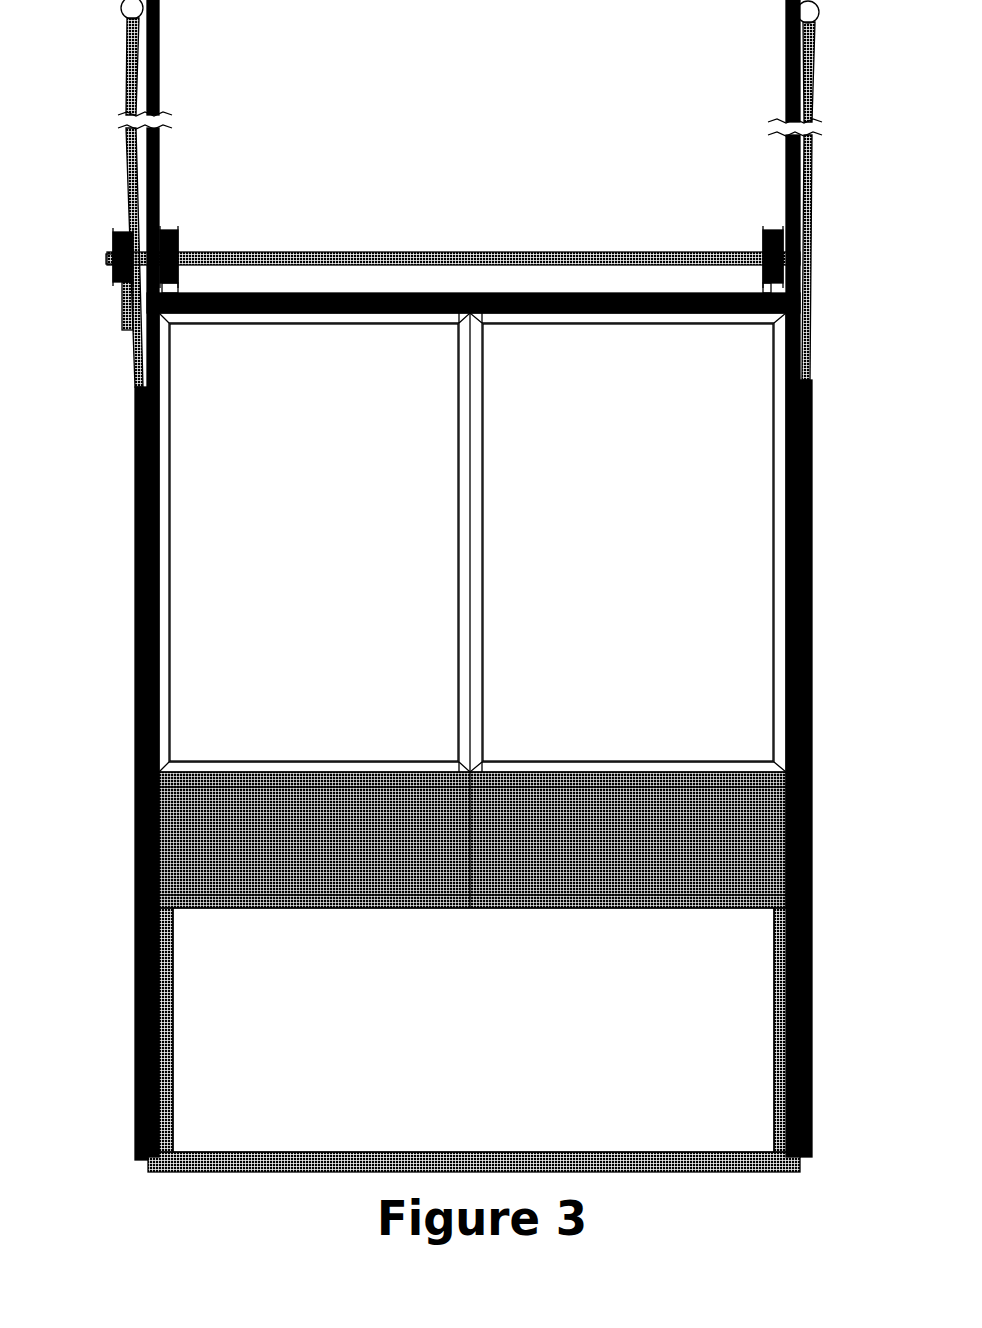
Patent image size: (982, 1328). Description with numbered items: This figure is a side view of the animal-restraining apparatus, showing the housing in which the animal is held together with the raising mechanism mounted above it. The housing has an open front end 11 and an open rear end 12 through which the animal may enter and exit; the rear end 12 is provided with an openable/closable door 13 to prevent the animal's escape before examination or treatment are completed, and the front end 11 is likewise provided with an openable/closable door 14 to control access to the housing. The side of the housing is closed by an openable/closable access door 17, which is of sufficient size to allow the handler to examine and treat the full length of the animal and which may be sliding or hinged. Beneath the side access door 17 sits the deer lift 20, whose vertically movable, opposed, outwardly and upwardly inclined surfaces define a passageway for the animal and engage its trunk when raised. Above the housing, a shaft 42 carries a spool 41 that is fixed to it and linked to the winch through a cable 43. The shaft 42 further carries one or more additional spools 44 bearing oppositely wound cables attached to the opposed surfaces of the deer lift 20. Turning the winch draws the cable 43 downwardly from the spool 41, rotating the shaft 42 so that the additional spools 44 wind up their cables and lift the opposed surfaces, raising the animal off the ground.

The front end 11 is at (787, 632).
The rear end 12 is at (158, 590).
The door 13 is at (135, 647).
The door 14 is at (810, 577).
The access door 17 is at (362, 519).
The deer lift 20 is at (492, 1051).
The spool 41 is at (113, 242).
The shaft 42 is at (320, 254).
The cable 43 is at (120, 313).
The additional spool 44 is at (170, 232).